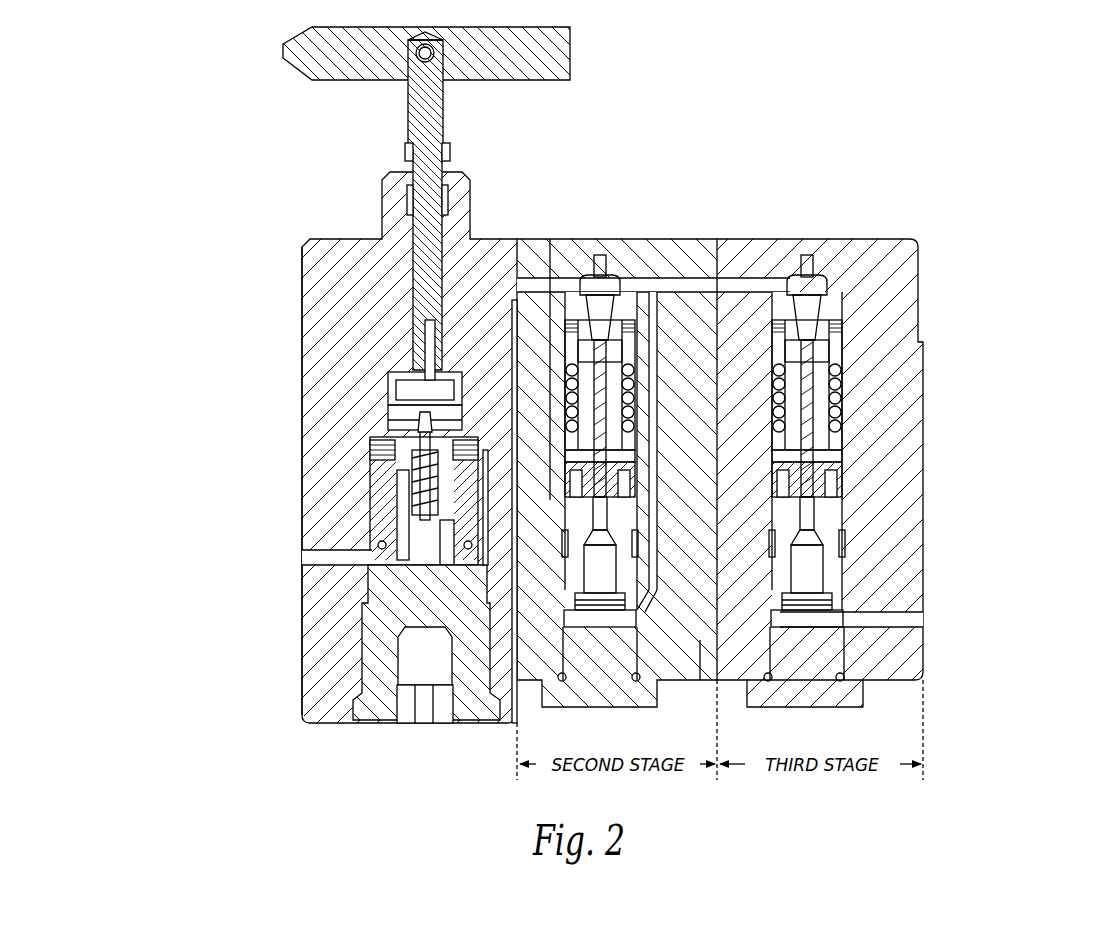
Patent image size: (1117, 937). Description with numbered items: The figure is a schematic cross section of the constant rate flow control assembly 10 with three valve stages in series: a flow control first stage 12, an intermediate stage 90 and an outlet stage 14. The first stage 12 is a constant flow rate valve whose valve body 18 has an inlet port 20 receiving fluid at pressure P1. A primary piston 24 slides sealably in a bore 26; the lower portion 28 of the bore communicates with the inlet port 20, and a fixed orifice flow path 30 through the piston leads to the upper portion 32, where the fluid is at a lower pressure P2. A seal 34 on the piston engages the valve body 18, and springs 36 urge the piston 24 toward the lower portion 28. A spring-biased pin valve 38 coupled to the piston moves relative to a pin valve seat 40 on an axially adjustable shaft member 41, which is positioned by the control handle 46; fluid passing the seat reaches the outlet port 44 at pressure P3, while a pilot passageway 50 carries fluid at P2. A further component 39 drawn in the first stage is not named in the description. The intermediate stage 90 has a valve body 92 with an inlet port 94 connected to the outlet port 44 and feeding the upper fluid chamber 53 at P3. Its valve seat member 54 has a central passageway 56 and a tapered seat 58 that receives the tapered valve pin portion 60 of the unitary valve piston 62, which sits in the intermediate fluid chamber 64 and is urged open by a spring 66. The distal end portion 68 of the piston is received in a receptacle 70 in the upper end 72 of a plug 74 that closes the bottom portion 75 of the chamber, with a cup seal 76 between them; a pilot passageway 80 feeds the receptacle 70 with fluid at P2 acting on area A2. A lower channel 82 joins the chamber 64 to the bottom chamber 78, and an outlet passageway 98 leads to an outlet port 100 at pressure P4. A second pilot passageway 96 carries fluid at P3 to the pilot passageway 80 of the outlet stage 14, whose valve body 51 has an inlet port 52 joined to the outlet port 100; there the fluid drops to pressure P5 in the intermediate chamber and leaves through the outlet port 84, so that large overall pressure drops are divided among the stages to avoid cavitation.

The flow control assembly 10 is at (120, 101).
The flow control first stage 12 is at (236, 165).
The outlet stage 14 is at (975, 245).
The valve body 18 is at (305, 245).
The inlet port 20 is at (298, 557).
The primary piston 24 is at (320, 600).
The bore 26 is at (385, 530).
The lower portion of the bore 28 is at (318, 632).
The fixed orifice flow path 30 is at (412, 480).
The upper portion of the bore 32 is at (392, 412).
The seal 34 is at (395, 545).
The springs 36 is at (375, 445).
The pin valve 38 is at (398, 375).
The threaded connection 39 is at (378, 462).
The pin valve seat 40 is at (418, 345).
The shaft member 41 is at (425, 282).
The outlet port 44 is at (470, 240).
The control handle 46 is at (572, 50).
The pilot passageway 50 is at (432, 700).
The valve body 51 is at (905, 335).
The inlet port 52 is at (760, 242).
The upper fluid chamber 53 is at (600, 262).
The valve seat member 54 is at (632, 278).
The central passageway 56 is at (840, 300).
The tapered seat 58 is at (830, 320).
The tapered valve pin portion 60 is at (825, 360).
The valve piston 62 is at (614, 320).
The intermediate fluid chamber 64 is at (835, 380).
The spring 66 is at (845, 340).
The distal end portion 68 is at (840, 460).
The receptacle 70 is at (865, 560).
The upper end of the plug 72 is at (810, 540).
The plug 74 is at (880, 690).
The bottom portion 75 is at (790, 615).
The cup seal 76 is at (840, 500).
The bottom chamber 78 is at (630, 660).
The pilot passageway 80 is at (485, 602).
The lower channel 82 is at (820, 600).
The outlet port 84 is at (930, 620).
The intermediate stage 90 is at (580, 620).
The valve body 92 is at (565, 290).
The inlet port 94 is at (525, 280).
The second pilot passageway 96 is at (700, 290).
The outlet passageway 98 is at (655, 560).
The outlet port 100 is at (655, 300).
The fluid pressure P1 is at (375, 545).
The second pressure P2 is at (455, 240).
The pressure P3 is at (528, 285).
The pressure P4 is at (635, 425).
The pressure P5 is at (918, 345).
The area A2 is at (720, 229).